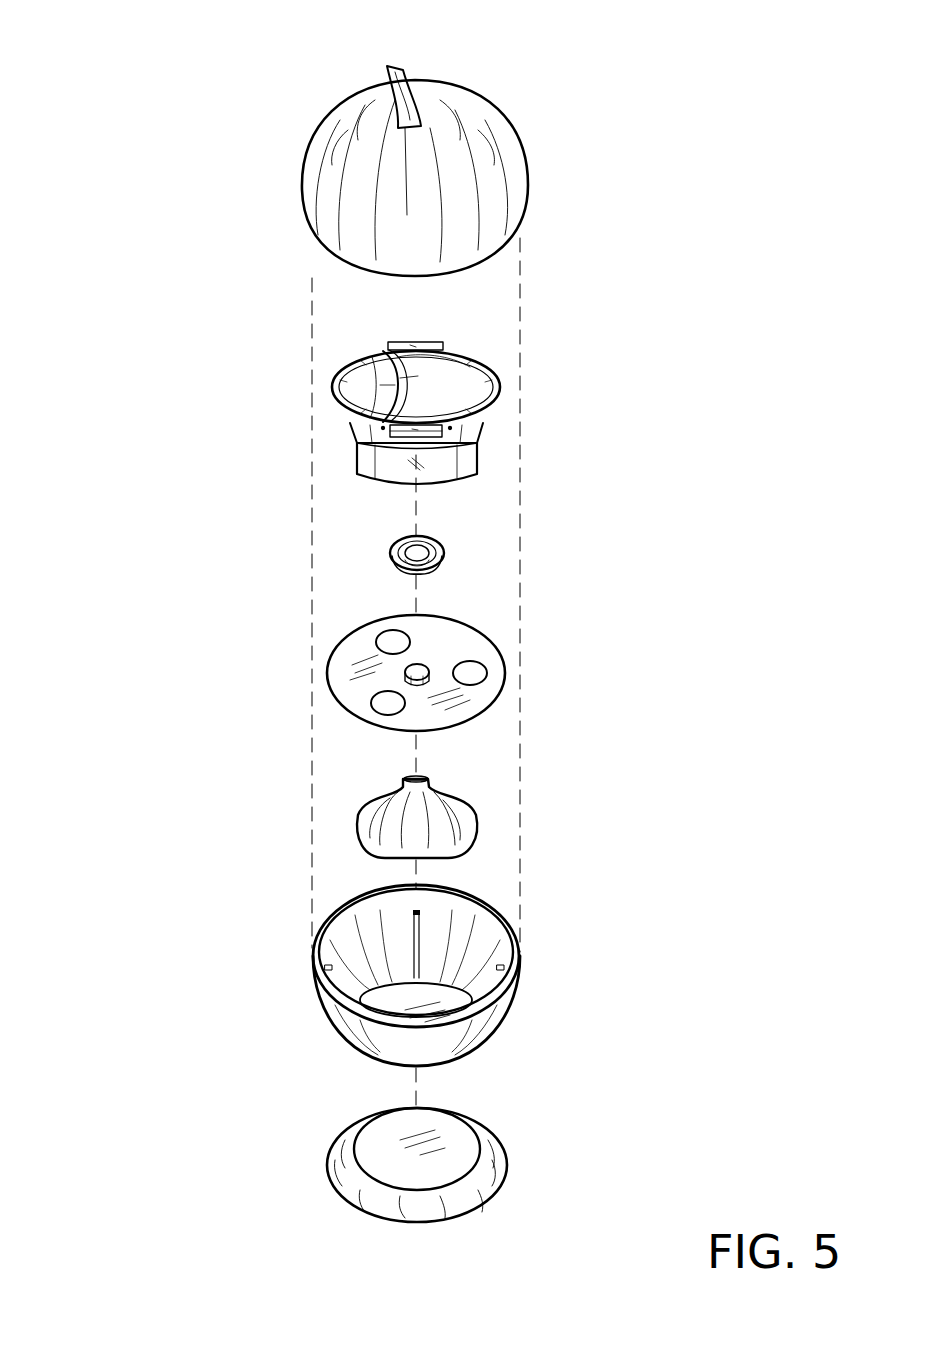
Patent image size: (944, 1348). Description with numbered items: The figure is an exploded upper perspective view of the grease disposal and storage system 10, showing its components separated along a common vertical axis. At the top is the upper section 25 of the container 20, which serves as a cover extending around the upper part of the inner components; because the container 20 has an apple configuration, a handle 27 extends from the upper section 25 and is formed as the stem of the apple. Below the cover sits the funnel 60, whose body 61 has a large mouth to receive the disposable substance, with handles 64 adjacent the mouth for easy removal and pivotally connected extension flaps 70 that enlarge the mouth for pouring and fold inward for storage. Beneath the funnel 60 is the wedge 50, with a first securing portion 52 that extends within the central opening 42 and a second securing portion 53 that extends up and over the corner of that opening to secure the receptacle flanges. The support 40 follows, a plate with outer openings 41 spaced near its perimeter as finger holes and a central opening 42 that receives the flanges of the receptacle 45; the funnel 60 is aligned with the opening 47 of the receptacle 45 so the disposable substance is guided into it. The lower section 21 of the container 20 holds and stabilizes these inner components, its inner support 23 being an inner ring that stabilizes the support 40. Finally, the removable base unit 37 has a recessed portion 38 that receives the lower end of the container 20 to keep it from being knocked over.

The grease disposal and storage system 10 is at (168, 100).
The upper section 25 is at (491, 162).
The handle 27 is at (396, 68).
The funnel 60 is at (418, 418).
The body 61 is at (482, 420).
The handles 64 is at (430, 343).
The extension flaps 70 is at (360, 377).
The first securing portion 52 is at (384, 477).
The second securing portion 53 is at (402, 509).
The wedge 50 is at (462, 553).
The support 40 is at (516, 685).
The outer openings 41 is at (484, 667).
The central opening 42 is at (432, 668).
The receptacle 45 is at (445, 807).
The opening 47 is at (428, 778).
The container 20 is at (434, 975).
The lower section 21 is at (332, 1013).
The inner support 23 is at (507, 967).
The base unit 37 is at (416, 1161).
The recessed portion 38 is at (372, 1147).